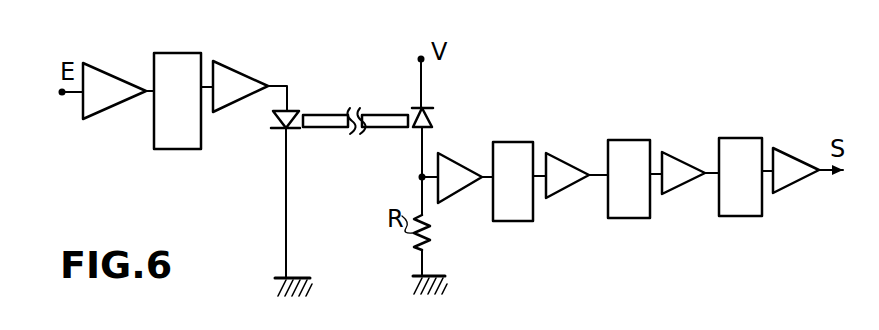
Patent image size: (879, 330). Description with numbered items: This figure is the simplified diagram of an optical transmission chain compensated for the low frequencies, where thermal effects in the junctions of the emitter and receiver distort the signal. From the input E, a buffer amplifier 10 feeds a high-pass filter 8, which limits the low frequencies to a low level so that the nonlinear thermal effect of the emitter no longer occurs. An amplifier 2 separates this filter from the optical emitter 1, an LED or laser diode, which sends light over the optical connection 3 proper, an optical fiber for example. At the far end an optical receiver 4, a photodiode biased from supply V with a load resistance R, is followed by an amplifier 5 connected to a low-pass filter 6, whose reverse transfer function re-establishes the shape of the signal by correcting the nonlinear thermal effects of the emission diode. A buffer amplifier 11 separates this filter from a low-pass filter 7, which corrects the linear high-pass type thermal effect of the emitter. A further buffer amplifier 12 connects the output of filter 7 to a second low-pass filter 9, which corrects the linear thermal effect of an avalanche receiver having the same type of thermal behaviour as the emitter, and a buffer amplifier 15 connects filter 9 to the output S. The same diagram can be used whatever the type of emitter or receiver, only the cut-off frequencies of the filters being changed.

The optical emitter 1 is at (272, 118).
The amplifier 2 is at (252, 48).
The optical connection 3 is at (328, 113).
The optical receiver 4 is at (433, 118).
The amplifier 5 is at (450, 198).
The low-pass filter 6 is at (512, 141).
The low-pass filter 7 is at (629, 140).
The high-pass filter 8 is at (177, 150).
The low-pass filter 9 is at (742, 137).
The buffer amplifier 10 is at (108, 50).
The buffer amplifier 11 is at (561, 195).
The buffer amplifier 12 is at (675, 191).
The buffer amplifier 15 is at (793, 190).